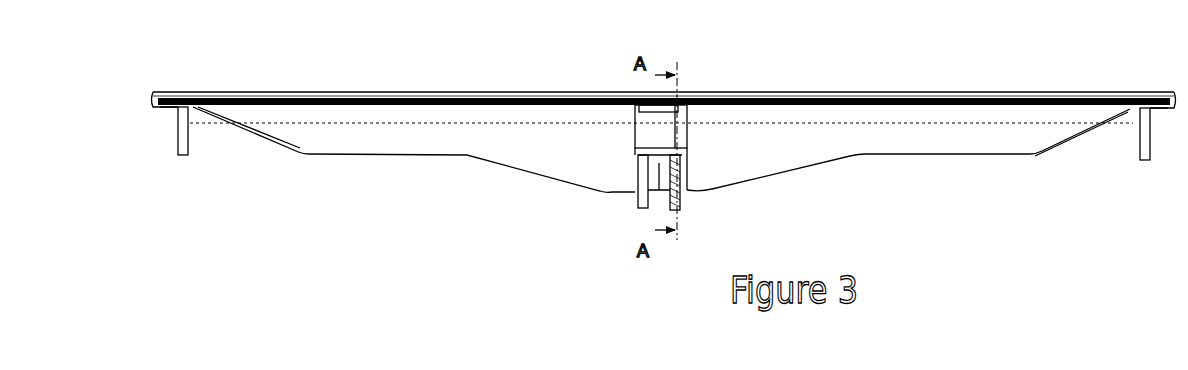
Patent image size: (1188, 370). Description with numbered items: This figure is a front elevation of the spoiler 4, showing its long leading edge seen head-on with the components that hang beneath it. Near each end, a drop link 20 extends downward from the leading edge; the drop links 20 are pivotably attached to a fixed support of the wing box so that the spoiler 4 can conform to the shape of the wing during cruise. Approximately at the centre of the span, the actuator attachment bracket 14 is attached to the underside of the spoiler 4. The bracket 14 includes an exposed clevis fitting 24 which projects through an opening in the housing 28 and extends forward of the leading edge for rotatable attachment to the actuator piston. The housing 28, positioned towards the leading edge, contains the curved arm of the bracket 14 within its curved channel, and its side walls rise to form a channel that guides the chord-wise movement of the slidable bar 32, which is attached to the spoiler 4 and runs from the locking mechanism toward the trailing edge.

The spoiler 4 is at (413, 125).
The actuator attachment bracket 14 is at (611, 208).
The drop links 20 is at (187, 152).
The clevis fitting 24 is at (680, 197).
The housing 28 is at (648, 133).
The slidable bar 32 is at (662, 105).